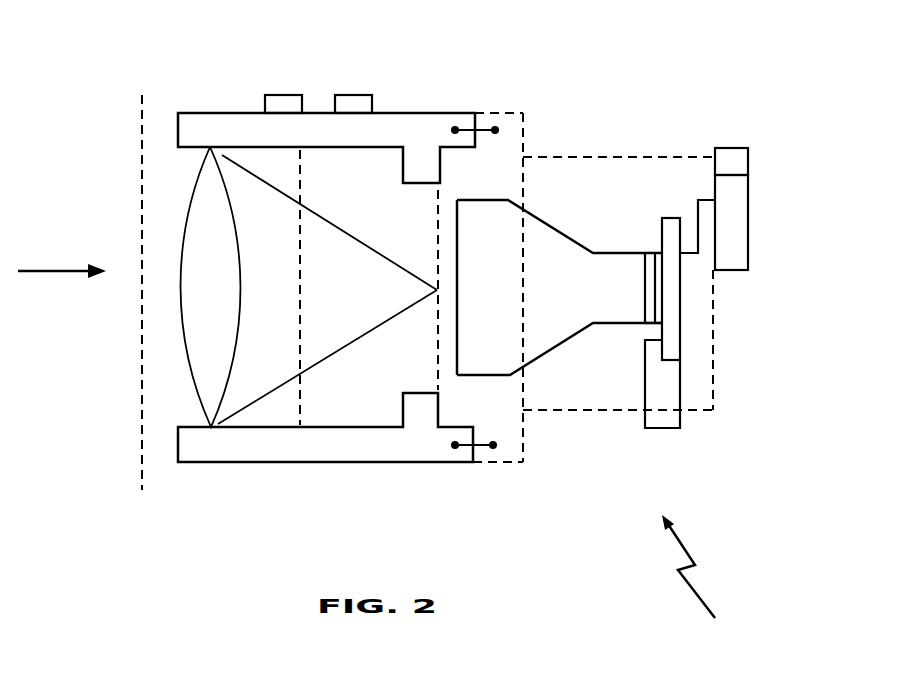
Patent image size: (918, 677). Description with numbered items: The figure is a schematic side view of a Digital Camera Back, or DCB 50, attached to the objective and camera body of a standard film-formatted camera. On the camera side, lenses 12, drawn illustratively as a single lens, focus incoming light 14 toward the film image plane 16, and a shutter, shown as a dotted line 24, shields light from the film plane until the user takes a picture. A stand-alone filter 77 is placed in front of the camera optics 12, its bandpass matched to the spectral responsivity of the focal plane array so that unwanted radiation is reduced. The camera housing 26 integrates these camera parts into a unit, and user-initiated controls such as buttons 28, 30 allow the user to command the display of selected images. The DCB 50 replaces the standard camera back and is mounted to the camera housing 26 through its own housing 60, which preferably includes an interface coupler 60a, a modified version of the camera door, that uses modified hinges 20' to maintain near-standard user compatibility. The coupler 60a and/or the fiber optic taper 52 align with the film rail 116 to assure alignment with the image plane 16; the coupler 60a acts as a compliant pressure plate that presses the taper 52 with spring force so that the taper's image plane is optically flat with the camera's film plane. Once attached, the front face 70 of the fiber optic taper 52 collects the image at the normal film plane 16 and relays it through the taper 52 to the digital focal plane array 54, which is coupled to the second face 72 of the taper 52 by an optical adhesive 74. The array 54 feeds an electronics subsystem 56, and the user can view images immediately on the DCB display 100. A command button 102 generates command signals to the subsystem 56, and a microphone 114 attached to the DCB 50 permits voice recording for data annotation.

The lenses 12 is at (309, 287).
The incoming light 14 is at (55, 270).
The film image plane 16 is at (432, 367).
The modified hinges 20' is at (487, 285).
The shutter 24 is at (306, 185).
The housing 26 is at (245, 443).
The button 28 is at (283, 93).
The button 30 is at (355, 93).
The digital camera back 50 is at (695, 579).
The fiber optic taper 52 is at (559, 287).
The digital focal plane array 54 is at (655, 253).
The electronics subsystem 56 is at (670, 323).
The housing 60 is at (713, 412).
The interface coupler 60a is at (528, 472).
The front face 70 is at (458, 323).
The second face 72 is at (645, 272).
The optical adhesive 74 is at (643, 325).
The stand-alone filter 77 is at (140, 127).
The DCB display 100 is at (750, 253).
The button 102 is at (662, 428).
The microphone 114 is at (750, 160).
The film rail 116 is at (438, 170).